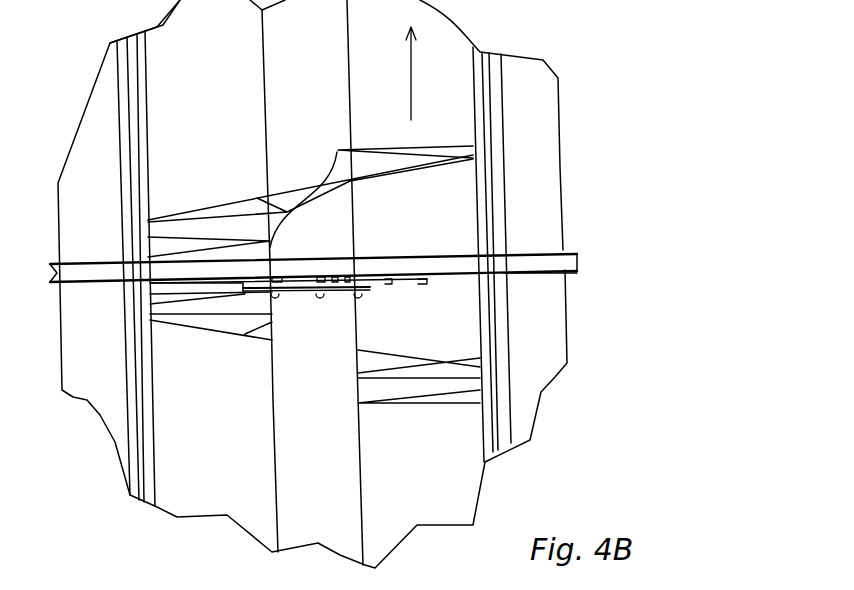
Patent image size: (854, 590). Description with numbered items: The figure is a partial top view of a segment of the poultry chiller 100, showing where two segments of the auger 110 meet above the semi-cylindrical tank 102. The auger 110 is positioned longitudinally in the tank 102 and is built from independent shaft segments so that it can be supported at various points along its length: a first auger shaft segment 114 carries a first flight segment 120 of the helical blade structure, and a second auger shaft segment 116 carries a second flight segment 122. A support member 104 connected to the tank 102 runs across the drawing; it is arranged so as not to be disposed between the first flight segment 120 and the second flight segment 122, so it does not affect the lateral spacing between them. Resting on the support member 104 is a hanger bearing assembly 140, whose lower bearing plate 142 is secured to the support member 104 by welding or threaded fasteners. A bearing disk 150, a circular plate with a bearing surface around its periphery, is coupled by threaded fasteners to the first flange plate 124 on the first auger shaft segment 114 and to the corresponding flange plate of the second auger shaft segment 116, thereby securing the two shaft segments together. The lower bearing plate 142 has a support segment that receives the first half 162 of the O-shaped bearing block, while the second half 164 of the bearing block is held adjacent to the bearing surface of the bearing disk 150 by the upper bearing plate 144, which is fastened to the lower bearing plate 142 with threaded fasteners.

The poultry chiller 100 is at (662, 132).
The tank 102 is at (553, 328).
The support member 104 is at (397, 273).
The auger 110 is at (259, 364).
The first auger shaft segment 114 is at (318, 477).
The second auger shaft segment 116 is at (310, 71).
The first flight segment 120 is at (405, 387).
The second flight segment 122 is at (247, 205).
The first flange plate 124 is at (340, 293).
The hanger bearing assembly 140 is at (297, 312).
The lower bearing plate 142 is at (222, 280).
The upper bearing plate 144 is at (422, 285).
The bearing disk 150 is at (300, 278).
The first half of the bearing block 162 is at (283, 275).
The second half of the bearing block 164 is at (390, 285).